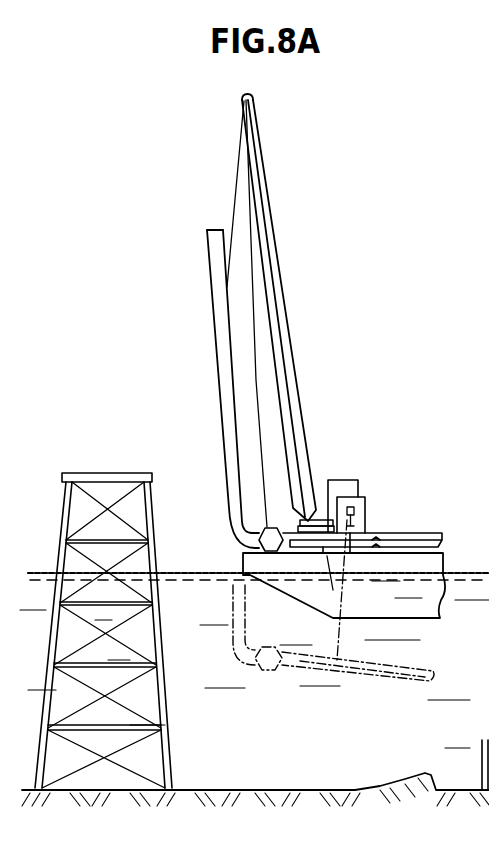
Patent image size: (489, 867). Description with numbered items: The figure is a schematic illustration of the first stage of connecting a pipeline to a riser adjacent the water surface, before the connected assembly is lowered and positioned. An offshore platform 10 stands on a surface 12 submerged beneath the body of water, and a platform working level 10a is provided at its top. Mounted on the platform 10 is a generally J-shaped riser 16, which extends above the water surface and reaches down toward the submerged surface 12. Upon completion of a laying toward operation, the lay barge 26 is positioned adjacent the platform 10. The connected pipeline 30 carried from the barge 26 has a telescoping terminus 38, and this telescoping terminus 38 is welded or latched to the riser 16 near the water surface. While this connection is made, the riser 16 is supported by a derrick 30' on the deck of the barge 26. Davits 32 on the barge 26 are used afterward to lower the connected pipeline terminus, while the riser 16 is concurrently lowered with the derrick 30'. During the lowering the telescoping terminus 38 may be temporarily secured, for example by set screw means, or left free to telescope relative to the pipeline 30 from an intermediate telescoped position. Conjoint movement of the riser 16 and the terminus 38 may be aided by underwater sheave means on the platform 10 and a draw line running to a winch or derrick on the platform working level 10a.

The offshore platform 10 is at (69, 464).
The platform working level 10a is at (117, 472).
The surface 12 is at (327, 789).
The riser 16 is at (218, 329).
The lay barge 26 is at (452, 562).
The pipeline 30 is at (362, 611).
The derrick 30' is at (314, 313).
The davits 32 is at (370, 499).
The telescoping terminus 38 is at (333, 590).